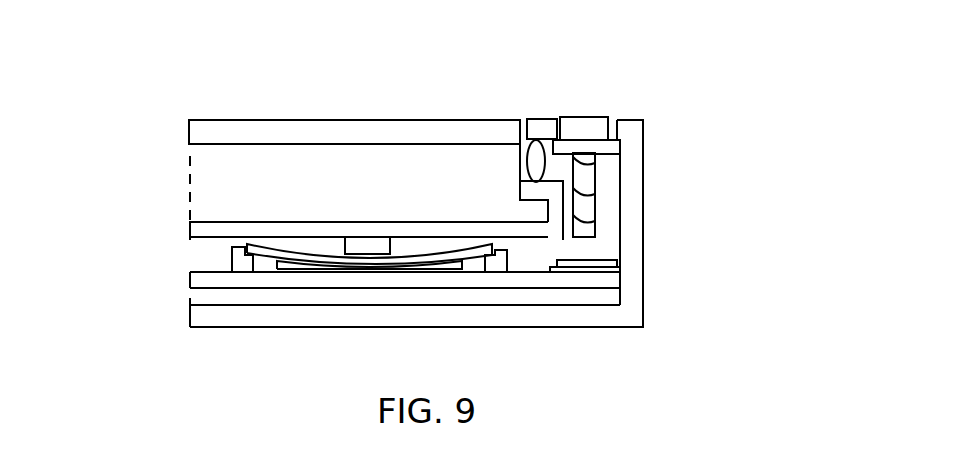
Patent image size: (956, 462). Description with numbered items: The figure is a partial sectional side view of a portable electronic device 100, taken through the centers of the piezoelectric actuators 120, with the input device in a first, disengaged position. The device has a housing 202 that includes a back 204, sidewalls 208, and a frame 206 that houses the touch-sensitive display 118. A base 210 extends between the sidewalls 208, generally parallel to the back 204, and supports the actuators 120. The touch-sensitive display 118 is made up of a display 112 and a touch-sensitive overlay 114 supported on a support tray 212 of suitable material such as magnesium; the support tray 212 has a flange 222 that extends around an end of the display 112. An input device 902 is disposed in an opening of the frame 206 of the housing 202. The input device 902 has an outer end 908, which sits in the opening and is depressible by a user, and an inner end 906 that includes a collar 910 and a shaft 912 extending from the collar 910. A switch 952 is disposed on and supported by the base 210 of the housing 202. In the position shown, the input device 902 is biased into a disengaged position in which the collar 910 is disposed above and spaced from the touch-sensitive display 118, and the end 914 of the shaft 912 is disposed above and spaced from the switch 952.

The portable electronic device 100 is at (537, 38).
The touch-sensitive display 118 is at (221, 120).
The display 112 is at (262, 155).
The touch-sensitive overlay 114 is at (353, 128).
The actuators 120 is at (345, 254).
The support tray 212 is at (212, 238).
The base 210 is at (370, 283).
The back 204 is at (420, 318).
The housing 202 is at (470, 327).
The outer end 908 is at (560, 118).
The flange 222 is at (561, 212).
The input device 902 is at (585, 130).
The collar 910 is at (603, 147).
The frame 206 is at (618, 132).
The sidewalls 208 is at (633, 298).
The inner end 906 is at (593, 170).
The shaft 912 is at (588, 203).
The end 914 is at (595, 237).
The switch 952 is at (620, 265).